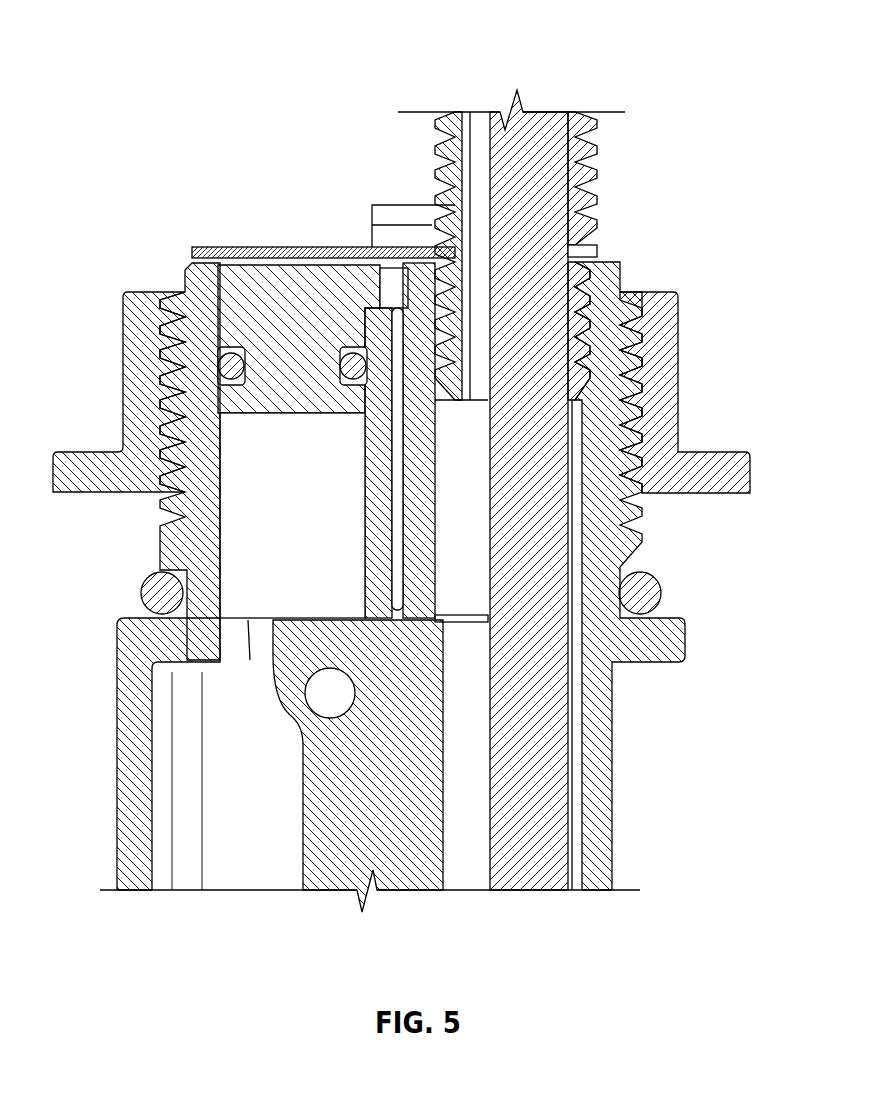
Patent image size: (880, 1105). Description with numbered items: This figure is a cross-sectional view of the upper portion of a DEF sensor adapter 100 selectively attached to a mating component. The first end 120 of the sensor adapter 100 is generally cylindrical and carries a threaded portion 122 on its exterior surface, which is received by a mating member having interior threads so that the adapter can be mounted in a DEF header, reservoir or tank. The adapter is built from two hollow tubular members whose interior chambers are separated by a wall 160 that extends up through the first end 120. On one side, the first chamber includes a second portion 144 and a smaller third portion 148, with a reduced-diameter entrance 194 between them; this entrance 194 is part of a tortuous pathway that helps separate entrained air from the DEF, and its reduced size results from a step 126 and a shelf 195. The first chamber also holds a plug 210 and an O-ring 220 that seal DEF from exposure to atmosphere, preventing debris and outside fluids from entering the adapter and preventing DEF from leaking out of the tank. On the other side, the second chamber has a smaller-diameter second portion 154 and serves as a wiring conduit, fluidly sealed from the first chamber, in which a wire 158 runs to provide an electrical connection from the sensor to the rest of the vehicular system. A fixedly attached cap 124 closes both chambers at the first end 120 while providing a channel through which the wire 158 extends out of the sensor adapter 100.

The sensor adapter 100 is at (155, 76).
The first end 120 is at (630, 294).
The threaded portion 122 is at (679, 296).
The cap 124 is at (363, 246).
The step 126 is at (215, 660).
The second portion 144 is at (220, 776).
The third portion 148 is at (240, 467).
The second portion 154 is at (462, 428).
The wire 158 is at (508, 220).
The wall 160 is at (391, 571).
The entrance 194 is at (250, 664).
The shelf 195 is at (303, 618).
The plug 210 is at (236, 318).
The O-ring 220 is at (224, 356).